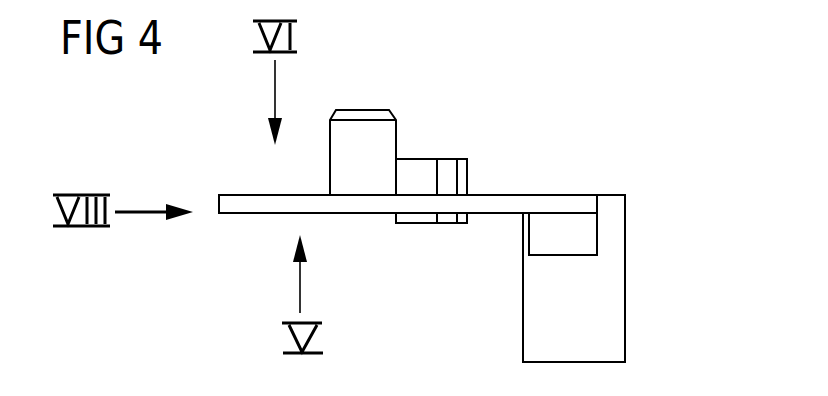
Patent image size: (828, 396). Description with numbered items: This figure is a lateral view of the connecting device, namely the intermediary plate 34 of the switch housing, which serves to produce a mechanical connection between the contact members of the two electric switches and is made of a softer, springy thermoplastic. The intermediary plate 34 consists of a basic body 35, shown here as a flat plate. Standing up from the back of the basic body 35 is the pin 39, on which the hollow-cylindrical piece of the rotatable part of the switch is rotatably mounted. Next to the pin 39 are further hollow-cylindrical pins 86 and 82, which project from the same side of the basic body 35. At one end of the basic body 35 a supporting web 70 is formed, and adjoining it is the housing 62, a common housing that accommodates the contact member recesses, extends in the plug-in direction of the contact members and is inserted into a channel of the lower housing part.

The intermediary plate 34 is at (220, 154).
The basic body 35 is at (275, 207).
The pin 39 is at (390, 128).
The hollow-cylindrical pin 86 is at (418, 168).
The hollow-cylindrical pin 82 is at (448, 175).
The supporting web 70 is at (582, 235).
The housing 62 is at (663, 301).